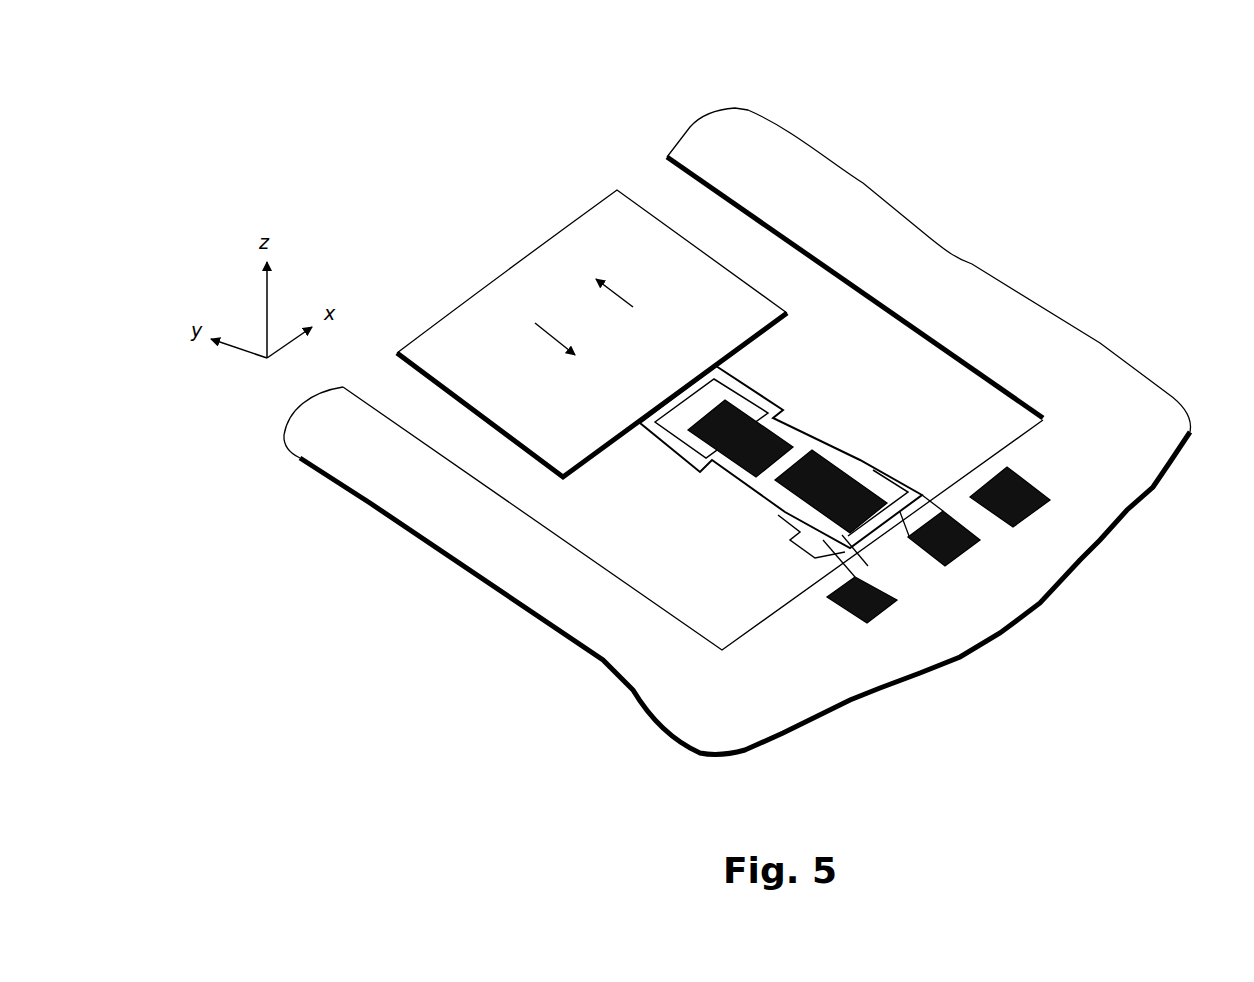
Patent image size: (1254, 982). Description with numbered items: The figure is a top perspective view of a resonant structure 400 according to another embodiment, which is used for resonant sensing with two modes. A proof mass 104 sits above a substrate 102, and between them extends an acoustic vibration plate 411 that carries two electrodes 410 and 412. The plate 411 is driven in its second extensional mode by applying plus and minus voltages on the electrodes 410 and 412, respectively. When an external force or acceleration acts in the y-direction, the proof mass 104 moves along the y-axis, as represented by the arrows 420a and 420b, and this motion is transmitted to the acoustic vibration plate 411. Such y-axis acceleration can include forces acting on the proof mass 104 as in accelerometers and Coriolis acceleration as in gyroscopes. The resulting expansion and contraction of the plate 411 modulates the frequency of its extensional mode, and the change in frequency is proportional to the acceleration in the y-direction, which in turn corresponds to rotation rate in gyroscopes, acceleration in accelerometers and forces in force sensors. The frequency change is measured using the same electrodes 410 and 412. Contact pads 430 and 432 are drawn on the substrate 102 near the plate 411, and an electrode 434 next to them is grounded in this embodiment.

The sensor assembly 400 is at (1168, 229).
The substrate 102 is at (747, 123).
The proof mass 104 is at (613, 210).
The acoustic vibration plate 411 is at (790, 432).
The electrode 410 is at (740, 438).
The electrode 412 is at (831, 491).
The arrow 420a is at (542, 344).
The arrow 420b is at (633, 291).
The contact pad 430 is at (960, 560).
The contact pad 432 is at (880, 620).
The electrode 434 is at (1037, 517).